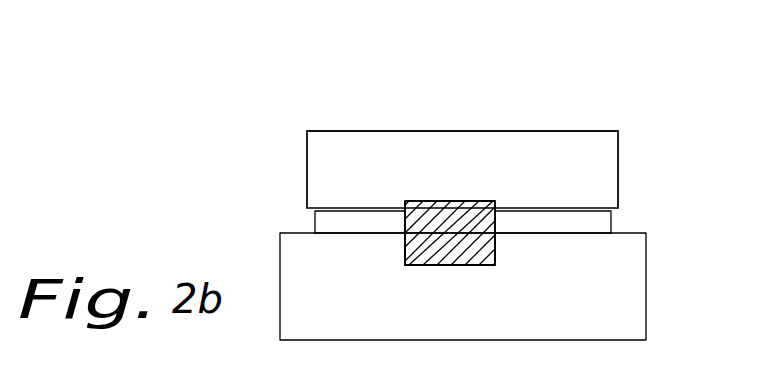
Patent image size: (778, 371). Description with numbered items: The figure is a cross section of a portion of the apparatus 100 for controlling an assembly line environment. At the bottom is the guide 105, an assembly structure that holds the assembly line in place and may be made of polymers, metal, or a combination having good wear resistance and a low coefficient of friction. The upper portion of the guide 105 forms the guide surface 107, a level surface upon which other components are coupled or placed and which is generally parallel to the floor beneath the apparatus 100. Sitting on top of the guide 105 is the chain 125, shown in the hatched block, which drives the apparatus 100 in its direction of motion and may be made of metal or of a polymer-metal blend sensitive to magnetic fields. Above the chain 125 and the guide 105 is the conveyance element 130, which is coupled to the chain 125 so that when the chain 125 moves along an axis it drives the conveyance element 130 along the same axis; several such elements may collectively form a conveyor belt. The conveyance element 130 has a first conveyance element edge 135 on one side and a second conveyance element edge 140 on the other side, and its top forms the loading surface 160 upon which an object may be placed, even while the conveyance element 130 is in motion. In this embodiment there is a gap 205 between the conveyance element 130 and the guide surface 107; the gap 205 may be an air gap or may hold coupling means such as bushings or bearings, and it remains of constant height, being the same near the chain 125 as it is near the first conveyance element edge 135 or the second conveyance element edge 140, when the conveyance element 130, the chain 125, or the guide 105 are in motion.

The apparatus 100 is at (150, 131).
The guide 105 is at (623, 292).
The guide surface 107 is at (318, 232).
The chain 125 is at (465, 247).
The conveyance element 130 is at (362, 155).
The first conveyance element edge 135 is at (307, 158).
The second conveyance element edge 140 is at (618, 158).
The loading surface 160 is at (463, 132).
The gap 205 is at (315, 220).